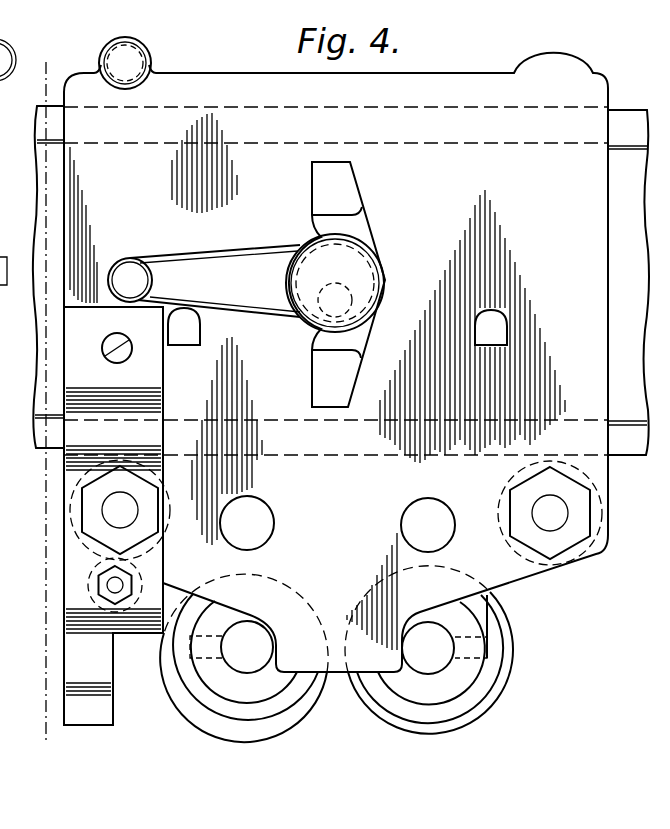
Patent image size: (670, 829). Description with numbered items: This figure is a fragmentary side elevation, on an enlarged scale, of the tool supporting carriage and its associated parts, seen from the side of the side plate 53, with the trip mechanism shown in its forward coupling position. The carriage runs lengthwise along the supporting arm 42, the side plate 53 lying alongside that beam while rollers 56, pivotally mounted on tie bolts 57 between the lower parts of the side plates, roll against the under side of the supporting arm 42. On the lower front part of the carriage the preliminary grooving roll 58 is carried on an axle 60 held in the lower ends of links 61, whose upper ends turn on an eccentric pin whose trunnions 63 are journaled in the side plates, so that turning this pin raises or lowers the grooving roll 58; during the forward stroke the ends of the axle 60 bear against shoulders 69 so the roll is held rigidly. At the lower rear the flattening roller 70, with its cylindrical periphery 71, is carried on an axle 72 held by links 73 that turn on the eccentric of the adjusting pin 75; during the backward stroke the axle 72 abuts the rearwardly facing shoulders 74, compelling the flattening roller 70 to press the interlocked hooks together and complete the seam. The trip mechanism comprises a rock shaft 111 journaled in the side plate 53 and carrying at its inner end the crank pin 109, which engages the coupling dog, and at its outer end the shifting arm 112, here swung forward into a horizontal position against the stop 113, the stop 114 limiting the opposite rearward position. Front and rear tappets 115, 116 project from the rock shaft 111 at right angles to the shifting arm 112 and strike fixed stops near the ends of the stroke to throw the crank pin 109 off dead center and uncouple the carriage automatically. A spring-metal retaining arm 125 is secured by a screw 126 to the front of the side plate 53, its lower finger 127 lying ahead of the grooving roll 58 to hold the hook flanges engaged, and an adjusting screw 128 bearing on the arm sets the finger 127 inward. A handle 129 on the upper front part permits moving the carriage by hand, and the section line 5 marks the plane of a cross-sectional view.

The section line 5- 5 is at (41, 397).
The supporting arm 42 is at (20, 197).
The side plate 53 is at (336, 389).
The rollers 56 is at (72, 493).
The tie bolts 57 is at (565, 527).
The grooving roll 58 is at (292, 708).
The axle 60 is at (250, 638).
The links 61 is at (213, 683).
The trunnions 63 is at (253, 523).
The shoulders 69 is at (263, 655).
The flattening roller 70 is at (502, 692).
The periphery 71 is at (382, 708).
The axle 72 is at (465, 652).
The links 73 is at (482, 613).
The shoulders 74 is at (383, 658).
The adjusting pin 75 is at (436, 516).
The crank pin 109 is at (360, 313).
The rock shaft 111 is at (372, 268).
The shifting arm 112 is at (180, 262).
The stop 113 is at (185, 333).
The stop 114 is at (490, 330).
The front tappet 115 is at (321, 390).
The rear tappet 116 is at (337, 193).
The retaining arm 125 is at (72, 578).
The screw 126 is at (113, 345).
The finger 127 is at (107, 727).
The adjusting screw 128 is at (107, 593).
The handle 129 is at (130, 58).